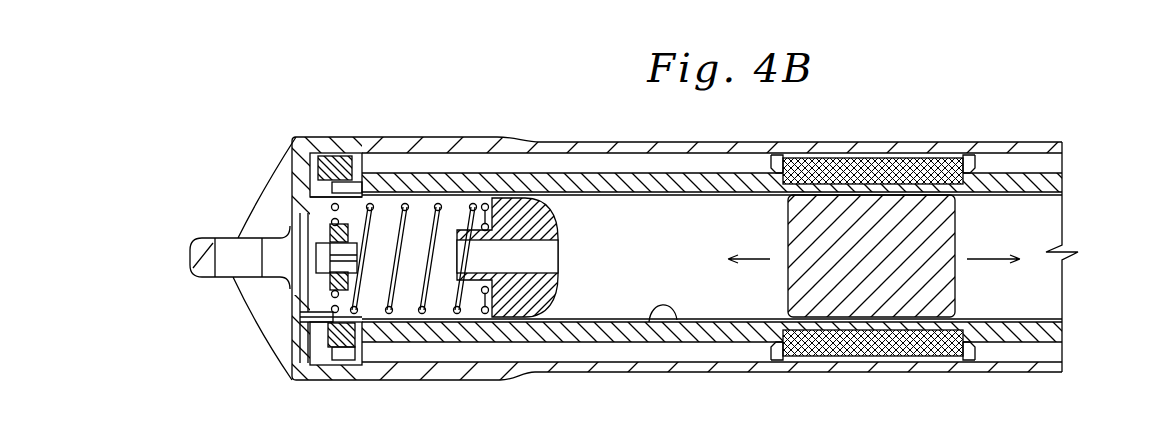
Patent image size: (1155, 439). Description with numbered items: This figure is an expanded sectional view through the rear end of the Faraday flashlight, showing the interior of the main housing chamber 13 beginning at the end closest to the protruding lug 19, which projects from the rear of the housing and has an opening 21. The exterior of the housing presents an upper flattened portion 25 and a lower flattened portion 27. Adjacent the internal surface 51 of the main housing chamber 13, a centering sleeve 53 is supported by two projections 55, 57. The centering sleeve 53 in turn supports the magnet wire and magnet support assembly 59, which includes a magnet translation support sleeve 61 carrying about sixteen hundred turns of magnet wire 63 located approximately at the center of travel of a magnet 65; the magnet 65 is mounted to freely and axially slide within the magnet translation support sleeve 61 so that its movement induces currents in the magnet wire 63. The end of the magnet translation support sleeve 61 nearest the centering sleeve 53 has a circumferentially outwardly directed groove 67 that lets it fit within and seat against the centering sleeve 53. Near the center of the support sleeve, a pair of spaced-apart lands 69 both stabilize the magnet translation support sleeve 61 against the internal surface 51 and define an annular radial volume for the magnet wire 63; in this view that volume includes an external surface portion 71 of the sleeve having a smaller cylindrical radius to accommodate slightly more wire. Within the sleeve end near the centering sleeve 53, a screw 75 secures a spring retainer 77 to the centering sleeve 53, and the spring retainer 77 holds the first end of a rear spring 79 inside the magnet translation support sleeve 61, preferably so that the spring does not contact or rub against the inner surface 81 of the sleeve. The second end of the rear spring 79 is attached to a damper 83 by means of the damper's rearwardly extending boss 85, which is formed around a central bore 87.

The main housing chamber 13 is at (313, 137).
The protruding lug 19 is at (193, 268).
The opening 21 is at (234, 268).
The upper flattened portion 25 is at (592, 141).
The lower flattened portion 27 is at (620, 367).
The internal surface 51 is at (436, 364).
The centering sleeve 53 is at (327, 213).
The projection 55 is at (312, 300).
The projection 57 is at (328, 175).
The magnet wire and magnet support assembly 59 is at (521, 349).
The magnet translation support sleeve 61 is at (590, 337).
The magnet wire 63 is at (885, 347).
The magnet 65 is at (952, 225).
The circumferentially outwardly directed groove 67 is at (334, 166).
The lands 69 is at (778, 153).
The external surface portion 71 is at (887, 157).
The screw 75 is at (308, 258).
The spring retainer 77 is at (356, 195).
The rear spring 79 is at (408, 225).
The inner surface 81 is at (677, 318).
The damper 83 is at (545, 220).
The rearwardly extending boss 85 is at (469, 285).
The central bore 87 is at (527, 240).